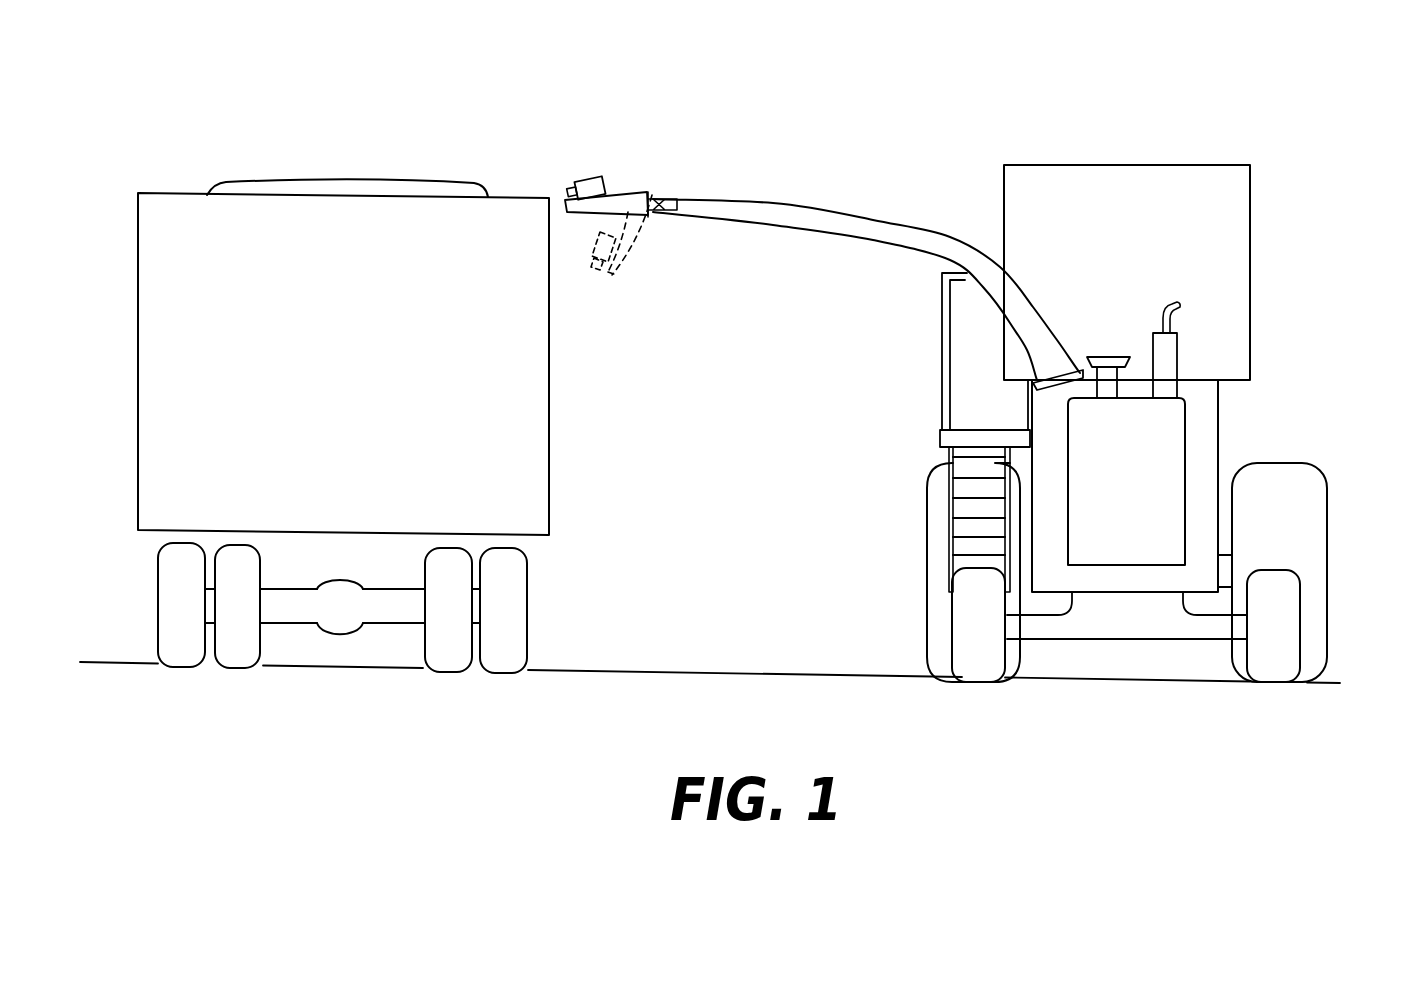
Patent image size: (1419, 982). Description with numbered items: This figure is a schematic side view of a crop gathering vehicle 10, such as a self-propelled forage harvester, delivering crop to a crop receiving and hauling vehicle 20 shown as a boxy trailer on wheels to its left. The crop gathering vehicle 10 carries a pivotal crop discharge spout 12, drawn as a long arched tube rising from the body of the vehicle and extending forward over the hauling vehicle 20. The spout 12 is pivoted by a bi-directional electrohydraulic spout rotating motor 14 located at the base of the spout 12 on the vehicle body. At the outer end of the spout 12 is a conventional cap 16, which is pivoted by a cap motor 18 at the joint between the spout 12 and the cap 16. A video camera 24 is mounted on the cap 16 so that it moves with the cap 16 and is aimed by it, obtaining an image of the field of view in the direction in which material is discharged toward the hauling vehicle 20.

The crop gathering vehicle 10 is at (1300, 93).
The crop discharge spout 12 is at (947, 237).
The spout rotating motor 14 is at (1072, 368).
The cap 16 is at (587, 215).
The cap motor 18 is at (675, 197).
The trailer 20 is at (455, 139).
The video camera 24 is at (587, 175).